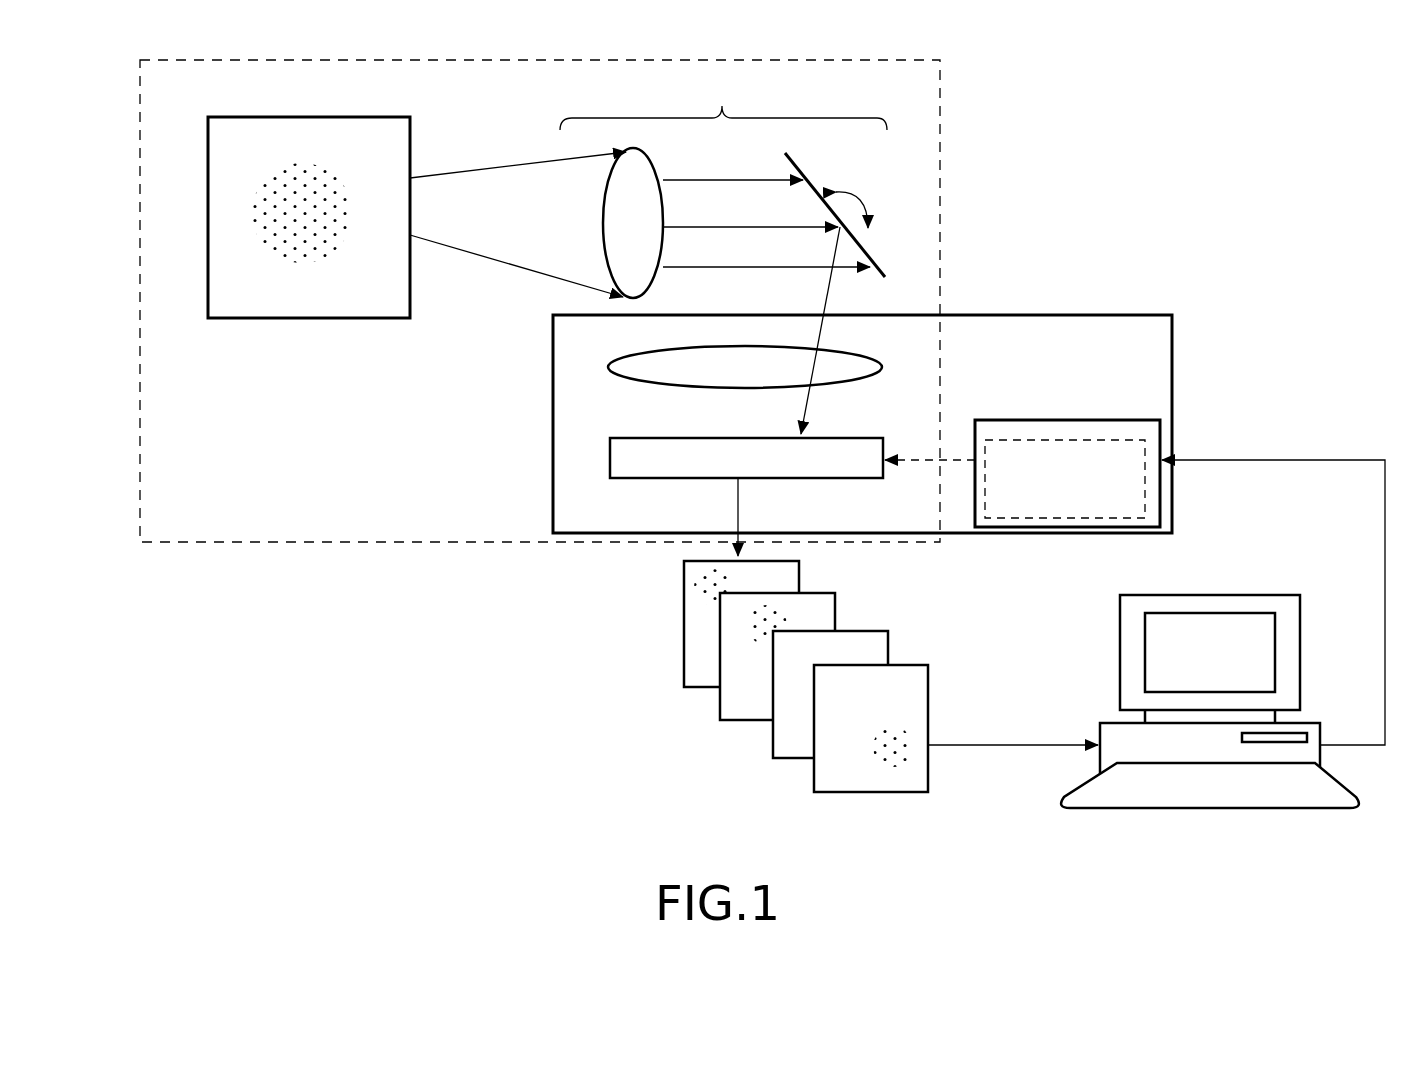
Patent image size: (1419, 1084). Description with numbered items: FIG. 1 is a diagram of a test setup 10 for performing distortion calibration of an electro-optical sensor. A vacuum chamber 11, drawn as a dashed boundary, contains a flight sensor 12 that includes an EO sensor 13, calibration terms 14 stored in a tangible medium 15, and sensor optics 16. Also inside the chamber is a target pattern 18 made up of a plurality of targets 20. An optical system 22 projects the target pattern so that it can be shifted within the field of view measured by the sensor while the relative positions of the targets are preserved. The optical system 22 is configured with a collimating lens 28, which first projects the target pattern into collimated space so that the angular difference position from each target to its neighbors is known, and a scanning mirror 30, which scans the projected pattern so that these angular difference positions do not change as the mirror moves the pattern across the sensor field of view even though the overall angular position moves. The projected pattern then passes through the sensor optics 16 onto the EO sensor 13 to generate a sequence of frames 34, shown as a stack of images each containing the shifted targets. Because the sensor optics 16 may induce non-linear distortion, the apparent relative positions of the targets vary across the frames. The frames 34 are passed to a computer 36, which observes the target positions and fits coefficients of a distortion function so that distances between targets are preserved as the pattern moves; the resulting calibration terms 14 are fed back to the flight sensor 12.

The test setup 10 is at (372, 683).
The vacuum chamber 11 is at (237, 542).
The flight sensor 12 is at (553, 485).
The EO sensor 13 is at (610, 443).
The calibration terms 14 is at (1148, 460).
The tangible medium 15 is at (1075, 420).
The sensor optics 16 is at (884, 367).
The target pattern 18 is at (208, 245).
The targets 20 is at (284, 272).
The optical system 22 is at (723, 101).
The collimating lens 28 is at (603, 197).
The scanning mirror 30 is at (790, 168).
The frames 34 is at (773, 735).
The computer 36 is at (1120, 640).